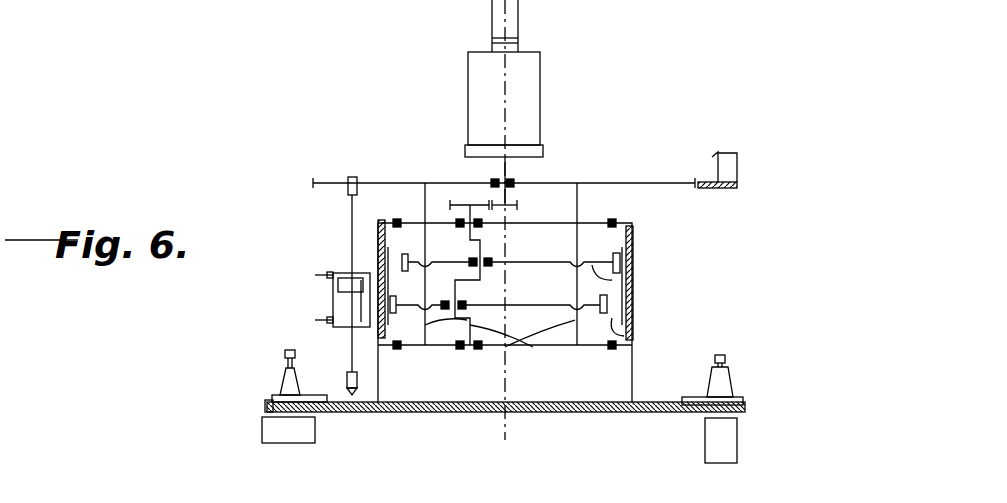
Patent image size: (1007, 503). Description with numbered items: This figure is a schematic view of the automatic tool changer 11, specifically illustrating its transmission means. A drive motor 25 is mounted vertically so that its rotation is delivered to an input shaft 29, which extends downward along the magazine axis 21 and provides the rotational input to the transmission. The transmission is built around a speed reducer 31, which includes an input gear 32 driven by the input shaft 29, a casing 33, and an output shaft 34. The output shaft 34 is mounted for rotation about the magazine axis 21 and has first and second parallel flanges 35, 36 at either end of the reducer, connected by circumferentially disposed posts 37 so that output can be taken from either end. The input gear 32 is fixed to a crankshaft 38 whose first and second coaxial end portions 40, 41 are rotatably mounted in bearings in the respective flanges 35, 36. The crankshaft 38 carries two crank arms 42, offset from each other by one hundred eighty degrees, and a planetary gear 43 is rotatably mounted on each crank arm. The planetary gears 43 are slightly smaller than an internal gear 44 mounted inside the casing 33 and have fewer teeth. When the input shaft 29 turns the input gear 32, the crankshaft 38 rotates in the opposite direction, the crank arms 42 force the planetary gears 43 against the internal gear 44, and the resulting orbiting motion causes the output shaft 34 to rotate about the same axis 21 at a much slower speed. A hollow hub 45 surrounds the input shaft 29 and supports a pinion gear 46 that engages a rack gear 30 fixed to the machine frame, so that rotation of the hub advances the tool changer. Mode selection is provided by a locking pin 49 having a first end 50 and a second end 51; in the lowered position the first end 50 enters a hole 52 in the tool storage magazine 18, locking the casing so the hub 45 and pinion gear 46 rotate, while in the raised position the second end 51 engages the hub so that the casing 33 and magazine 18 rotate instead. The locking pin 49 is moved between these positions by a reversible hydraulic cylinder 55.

The automatic tool changer 11 is at (286, 168).
The tool storage magazine 18 is at (436, 423).
The magazine axis 21 is at (507, 412).
The drive motor 25 is at (527, 67).
The input shaft 29 is at (515, 197).
The rack gear 30 is at (730, 190).
The speed reducer 31 is at (645, 304).
The input gear 32 is at (458, 182).
The casing 33 is at (632, 250).
The output shaft 34 is at (582, 206).
The first flange 35 is at (549, 206).
The second flange 36 is at (581, 348).
The posts 37 is at (518, 346).
The crankshaft 38 is at (444, 242).
The first coaxial end portion 40 is at (483, 241).
The second coaxial end portion 41 is at (457, 347).
The crank arms 42 is at (458, 292).
The planetary gear 43 is at (620, 277).
The internal gear 44 is at (376, 250).
The hollow hub 45 is at (462, 200).
The pinion gear 46 is at (662, 183).
The locking pin 49 is at (348, 346).
The first end 50 is at (346, 379).
The second end 51 is at (350, 176).
The hole 52 is at (352, 413).
The reversible hydraulic cylinder 55 is at (322, 296).